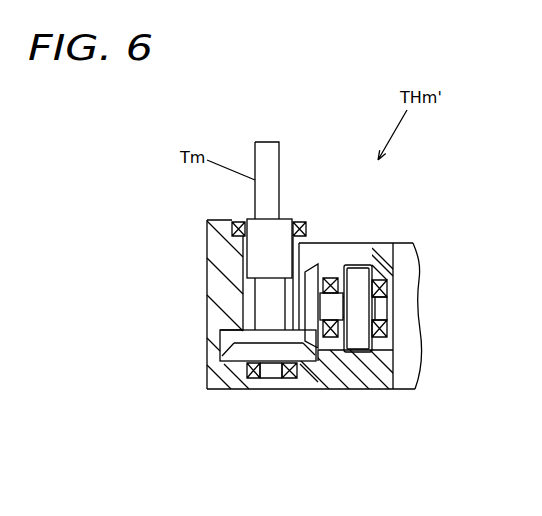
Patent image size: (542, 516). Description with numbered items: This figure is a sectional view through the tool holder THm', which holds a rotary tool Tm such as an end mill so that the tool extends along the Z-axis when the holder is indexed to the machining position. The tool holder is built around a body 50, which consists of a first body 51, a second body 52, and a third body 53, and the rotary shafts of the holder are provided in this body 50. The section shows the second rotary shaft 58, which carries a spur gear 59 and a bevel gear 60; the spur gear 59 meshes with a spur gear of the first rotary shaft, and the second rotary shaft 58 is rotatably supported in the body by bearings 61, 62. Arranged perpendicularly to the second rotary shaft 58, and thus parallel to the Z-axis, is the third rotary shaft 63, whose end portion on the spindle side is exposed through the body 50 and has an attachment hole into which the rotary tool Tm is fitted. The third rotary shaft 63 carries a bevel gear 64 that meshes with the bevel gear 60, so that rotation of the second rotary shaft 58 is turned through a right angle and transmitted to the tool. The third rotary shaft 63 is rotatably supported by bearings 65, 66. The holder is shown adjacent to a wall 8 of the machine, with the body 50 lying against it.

The wall 8 is at (418, 273).
The body 50 is at (368, 460).
The first body 51 is at (363, 389).
The second body 52 is at (320, 389).
The third body 53 is at (262, 389).
The second rotary shaft 58 is at (384, 311).
The spur gear 59 is at (357, 266).
The bevel gear 60 is at (308, 268).
The bearing 61 is at (378, 281).
The bearing 62 is at (328, 279).
The third rotary shaft 63 is at (258, 297).
The bevel gear 64 is at (221, 344).
The bearing 65 is at (250, 371).
The bearing 66 is at (233, 228).